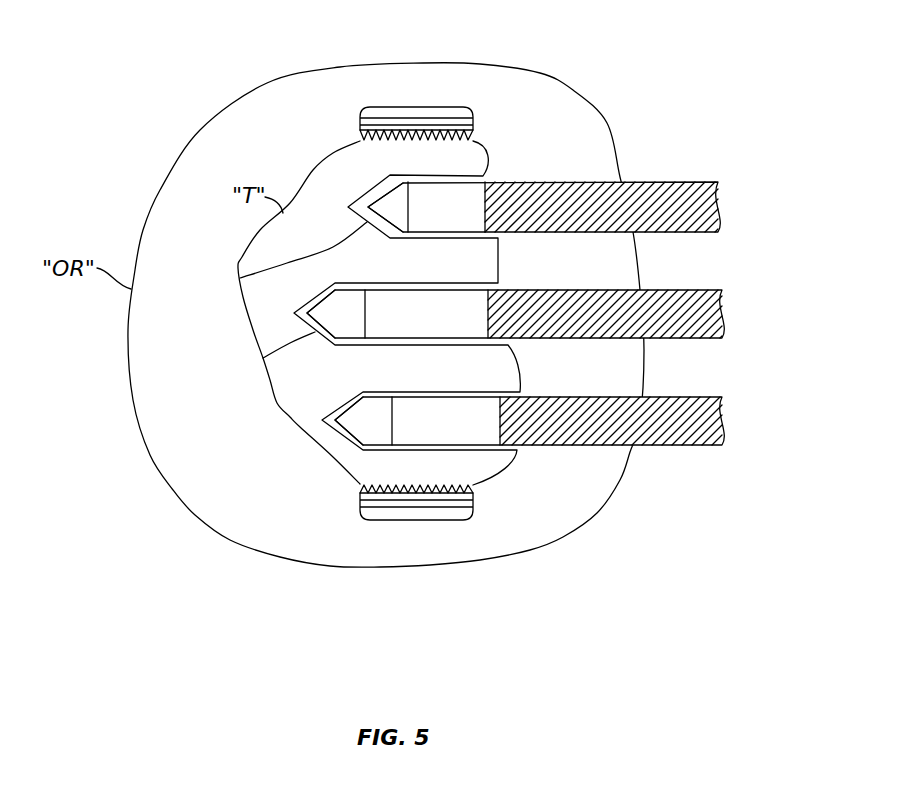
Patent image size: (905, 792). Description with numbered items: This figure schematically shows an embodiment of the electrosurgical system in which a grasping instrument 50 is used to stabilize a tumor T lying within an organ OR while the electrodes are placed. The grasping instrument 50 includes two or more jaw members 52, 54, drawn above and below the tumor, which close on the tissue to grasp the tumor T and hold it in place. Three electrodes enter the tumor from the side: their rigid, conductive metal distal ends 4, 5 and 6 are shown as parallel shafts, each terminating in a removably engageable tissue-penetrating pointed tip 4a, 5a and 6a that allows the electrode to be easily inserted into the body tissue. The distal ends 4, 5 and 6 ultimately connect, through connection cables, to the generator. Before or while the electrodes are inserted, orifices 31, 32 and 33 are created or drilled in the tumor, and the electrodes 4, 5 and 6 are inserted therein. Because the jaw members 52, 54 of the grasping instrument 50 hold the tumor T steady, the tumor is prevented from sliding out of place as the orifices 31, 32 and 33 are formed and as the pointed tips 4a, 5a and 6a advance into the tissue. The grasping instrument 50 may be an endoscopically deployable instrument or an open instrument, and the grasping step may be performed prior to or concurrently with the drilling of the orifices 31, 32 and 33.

The distal end 4 is at (466, 203).
The tissue-penetrating pointed tip 4a is at (397, 203).
The distal end 5 is at (410, 302).
The tissue-penetrating pointed tip 5a is at (345, 302).
The distal end 6 is at (435, 408).
The tissue-penetrating pointed tip 6a is at (373, 408).
The orifice 31 is at (240, 277).
The orifice 32 is at (263, 358).
The orifice 33 is at (345, 437).
The grasping instrument 50 is at (423, 103).
The jaw member 52 is at (377, 105).
The jaw member 54 is at (417, 521).